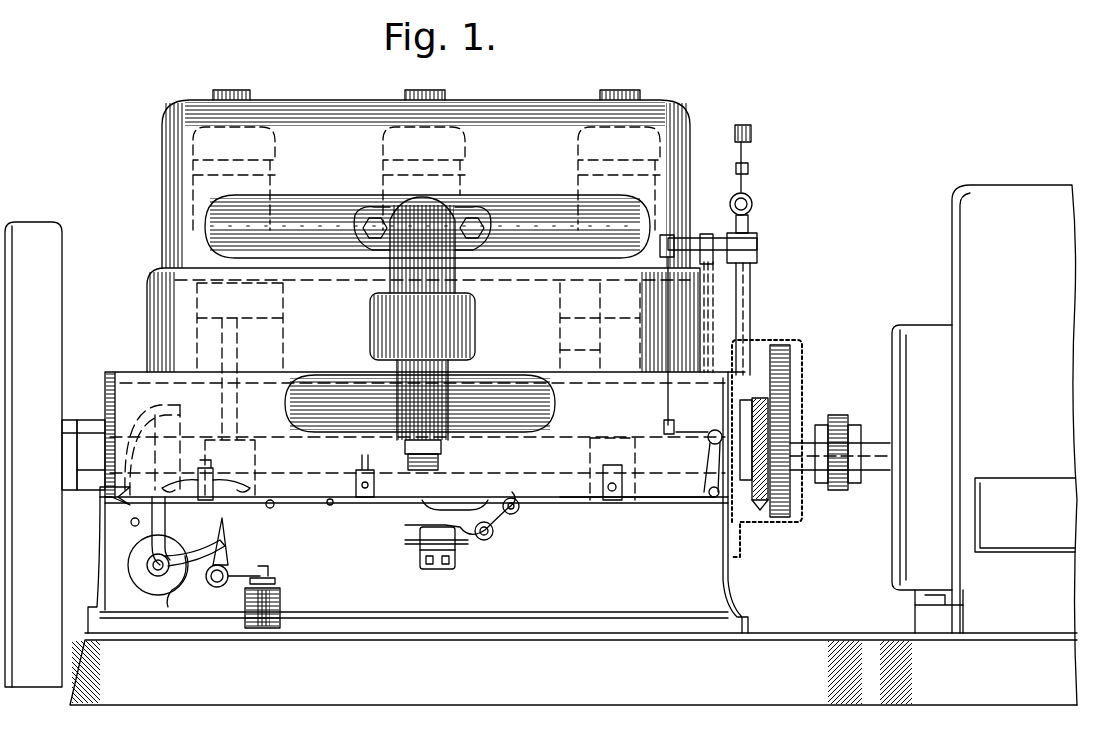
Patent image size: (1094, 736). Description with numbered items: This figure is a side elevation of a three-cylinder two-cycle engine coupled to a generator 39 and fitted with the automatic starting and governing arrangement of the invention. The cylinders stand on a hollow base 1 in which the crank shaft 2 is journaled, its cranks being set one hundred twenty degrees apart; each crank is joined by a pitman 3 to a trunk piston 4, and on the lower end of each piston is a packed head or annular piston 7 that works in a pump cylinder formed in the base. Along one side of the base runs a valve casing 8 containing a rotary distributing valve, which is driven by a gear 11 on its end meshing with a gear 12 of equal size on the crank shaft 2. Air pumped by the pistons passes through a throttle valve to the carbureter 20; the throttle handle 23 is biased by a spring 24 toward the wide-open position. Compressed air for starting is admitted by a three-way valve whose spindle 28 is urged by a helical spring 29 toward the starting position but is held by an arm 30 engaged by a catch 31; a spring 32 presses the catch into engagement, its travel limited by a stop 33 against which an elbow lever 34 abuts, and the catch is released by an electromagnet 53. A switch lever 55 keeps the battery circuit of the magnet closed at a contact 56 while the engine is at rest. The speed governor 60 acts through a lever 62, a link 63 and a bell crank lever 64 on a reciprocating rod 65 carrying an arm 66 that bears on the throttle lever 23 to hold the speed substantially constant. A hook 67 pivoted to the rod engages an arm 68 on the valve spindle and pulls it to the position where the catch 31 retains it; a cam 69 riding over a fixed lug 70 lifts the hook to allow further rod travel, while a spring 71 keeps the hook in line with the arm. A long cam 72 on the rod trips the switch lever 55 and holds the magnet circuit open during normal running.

The hollow base 1 is at (728, 577).
The crank shaft 2 is at (805, 470).
The pitman 3 is at (237, 347).
The trunk piston 4 is at (208, 190).
The annular piston 7 is at (270, 298).
The valve casing 8 is at (126, 395).
The gear 11 is at (790, 362).
The gear 12 is at (782, 518).
The carbureter 20 is at (372, 330).
The throttle valve handle 23 is at (405, 447).
The spring 24 is at (441, 465).
The spindle 28 is at (160, 565).
The helical spring 29 is at (210, 535).
The arm 30 is at (188, 598).
The catch 31 is at (224, 533).
The spring 32 is at (226, 570).
The stop 33 is at (266, 566).
The elbow lever 34 is at (275, 580).
The generator 39 is at (984, 445).
The electromagnet 53 is at (280, 600).
The switch lever 55 is at (425, 525).
The contact 56 is at (455, 553).
The speed governor 60 is at (752, 178).
The lever 62 is at (695, 240).
The link 63 is at (665, 400).
The bell crank lever 64 is at (700, 455).
The reciprocating rod 65 is at (665, 500).
The arm 66 is at (360, 468).
The hook 67 is at (100, 497).
The arm 68 is at (165, 520).
The cam 69 is at (265, 507).
The fixed lug 70 is at (322, 505).
The spring 71 is at (226, 476).
The cam 72 is at (430, 504).